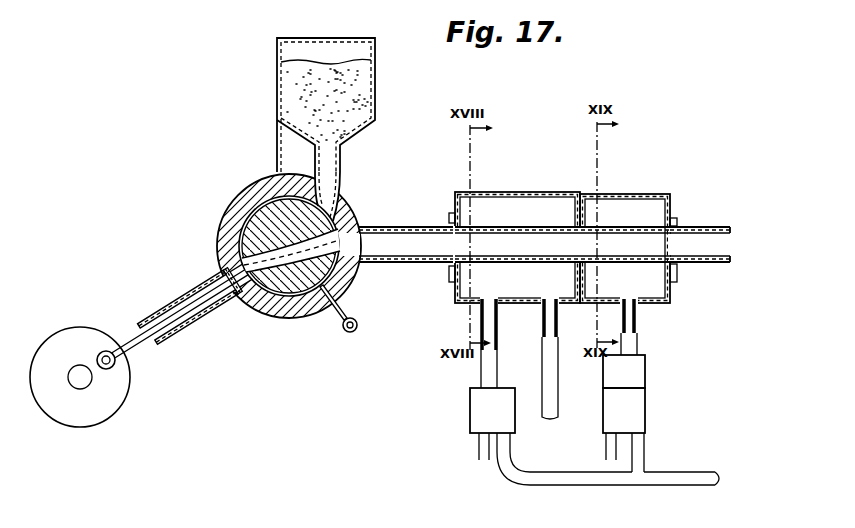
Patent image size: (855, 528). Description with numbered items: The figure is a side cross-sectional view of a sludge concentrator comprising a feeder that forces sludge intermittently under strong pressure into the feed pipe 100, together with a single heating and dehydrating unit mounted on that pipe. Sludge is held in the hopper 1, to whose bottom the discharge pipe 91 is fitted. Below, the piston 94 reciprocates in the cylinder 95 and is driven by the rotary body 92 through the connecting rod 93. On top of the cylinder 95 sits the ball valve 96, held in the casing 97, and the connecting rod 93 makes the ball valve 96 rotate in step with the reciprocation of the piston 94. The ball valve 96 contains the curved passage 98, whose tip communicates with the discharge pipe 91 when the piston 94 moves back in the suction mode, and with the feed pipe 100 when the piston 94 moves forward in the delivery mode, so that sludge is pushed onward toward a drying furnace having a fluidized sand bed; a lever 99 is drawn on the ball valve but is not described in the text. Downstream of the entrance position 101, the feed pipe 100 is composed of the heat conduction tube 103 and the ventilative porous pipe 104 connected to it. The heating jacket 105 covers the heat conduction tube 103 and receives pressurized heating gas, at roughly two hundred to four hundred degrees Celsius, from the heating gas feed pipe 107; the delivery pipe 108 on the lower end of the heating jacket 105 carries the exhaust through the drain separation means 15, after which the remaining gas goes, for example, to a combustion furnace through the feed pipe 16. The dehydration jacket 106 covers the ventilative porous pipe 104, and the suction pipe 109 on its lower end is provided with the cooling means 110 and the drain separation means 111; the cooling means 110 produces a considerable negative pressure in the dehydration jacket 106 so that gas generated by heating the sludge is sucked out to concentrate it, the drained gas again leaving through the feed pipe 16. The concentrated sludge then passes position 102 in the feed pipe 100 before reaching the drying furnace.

The hopper 1 is at (378, 76).
The discharge pipe 91 is at (340, 158).
The rotary body 92 is at (90, 338).
The connecting rod 93 is at (120, 347).
The piston 94 is at (216, 258).
The cylinder 95 is at (182, 298).
The ball valve 96 is at (250, 200).
The casing 97 is at (262, 186).
The curved passage 98 is at (342, 214).
The rotor lever 99 is at (345, 333).
The feed pipe 100 is at (391, 263).
The entrance position 101 is at (412, 227).
The position in feed pipe 102 is at (702, 240).
The heat conduction tube 103 is at (478, 224).
The ventilative porous pipe 104 is at (622, 212).
The heating jacket 105 is at (545, 167).
The dehydration jacket 106 is at (660, 196).
The heating gas feed pipe 107 is at (560, 397).
The delivery pipe 108 is at (487, 374).
The suction pipe 109 is at (640, 340).
The cooling means 110 is at (642, 374).
The drain separation means 111 is at (642, 408).
The drain separation means 15 is at (480, 415).
The feed pipe 16 is at (690, 486).